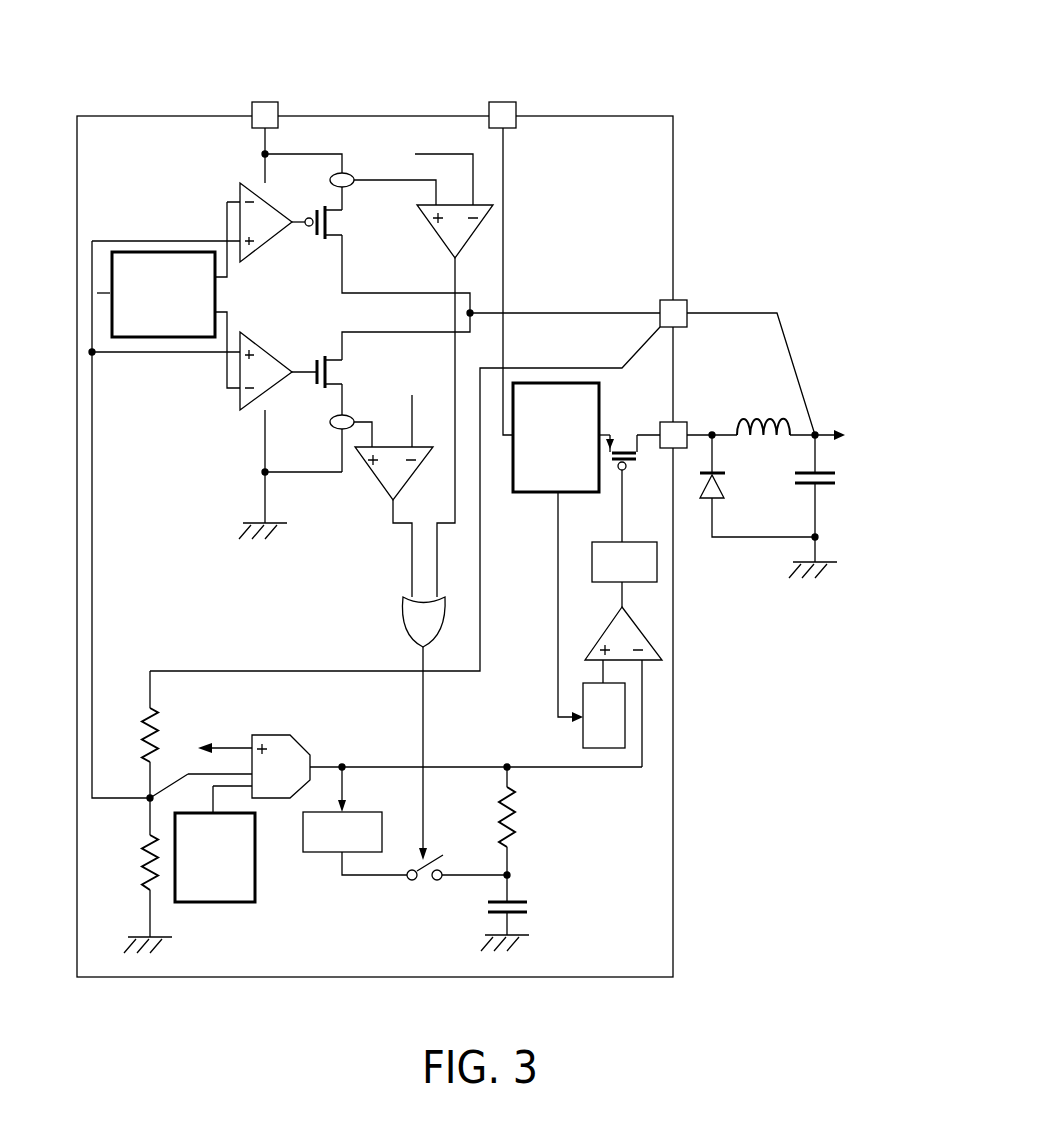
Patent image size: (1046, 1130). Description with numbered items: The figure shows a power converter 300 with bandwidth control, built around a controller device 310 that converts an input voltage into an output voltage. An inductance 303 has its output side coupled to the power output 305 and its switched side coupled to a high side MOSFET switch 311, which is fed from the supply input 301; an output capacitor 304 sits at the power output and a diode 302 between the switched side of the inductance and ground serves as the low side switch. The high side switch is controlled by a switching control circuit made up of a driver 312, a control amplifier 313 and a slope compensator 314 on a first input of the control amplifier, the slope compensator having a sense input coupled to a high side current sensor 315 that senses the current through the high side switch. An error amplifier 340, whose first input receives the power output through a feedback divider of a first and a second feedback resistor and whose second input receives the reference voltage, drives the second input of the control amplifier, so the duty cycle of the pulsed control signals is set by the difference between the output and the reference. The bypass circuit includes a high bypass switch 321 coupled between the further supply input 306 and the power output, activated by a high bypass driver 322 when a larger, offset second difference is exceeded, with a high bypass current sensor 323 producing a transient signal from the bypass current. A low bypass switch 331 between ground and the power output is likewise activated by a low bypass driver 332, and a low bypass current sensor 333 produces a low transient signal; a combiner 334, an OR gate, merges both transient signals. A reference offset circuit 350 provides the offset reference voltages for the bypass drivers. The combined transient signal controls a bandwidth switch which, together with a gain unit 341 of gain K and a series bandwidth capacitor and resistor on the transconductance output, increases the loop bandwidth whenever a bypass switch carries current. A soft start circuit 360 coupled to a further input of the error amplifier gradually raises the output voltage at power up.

The power converter 300 is at (762, 38).
The supply input 301 is at (504, 92).
The diode 302 is at (705, 508).
The inductance 303 is at (778, 442).
The capacitor Cout 304 is at (806, 492).
The power output 305 is at (680, 300).
The further supply input 306 is at (267, 92).
The controller device 310 is at (673, 870).
The high side switch 311 is at (620, 446).
The driver 312 is at (592, 552).
The control amplifier 313 is at (604, 630).
The slope compensator 314 is at (583, 735).
The high side current sensor 315 is at (522, 494).
The high bypass switch 321 is at (333, 222).
The high bypass driver 322 is at (270, 204).
The high bypass current sensor 323 is at (446, 246).
The low bypass switch 331 is at (333, 372).
The low bypass driver 332 is at (268, 338).
The low bypass current sensor 333 is at (382, 483).
The combiner 334 is at (405, 624).
The error amplifier 340 is at (270, 735).
The gain unit 341 is at (322, 852).
The reference offset circuit 350 is at (218, 302).
The soft start circuit 360 is at (217, 904).